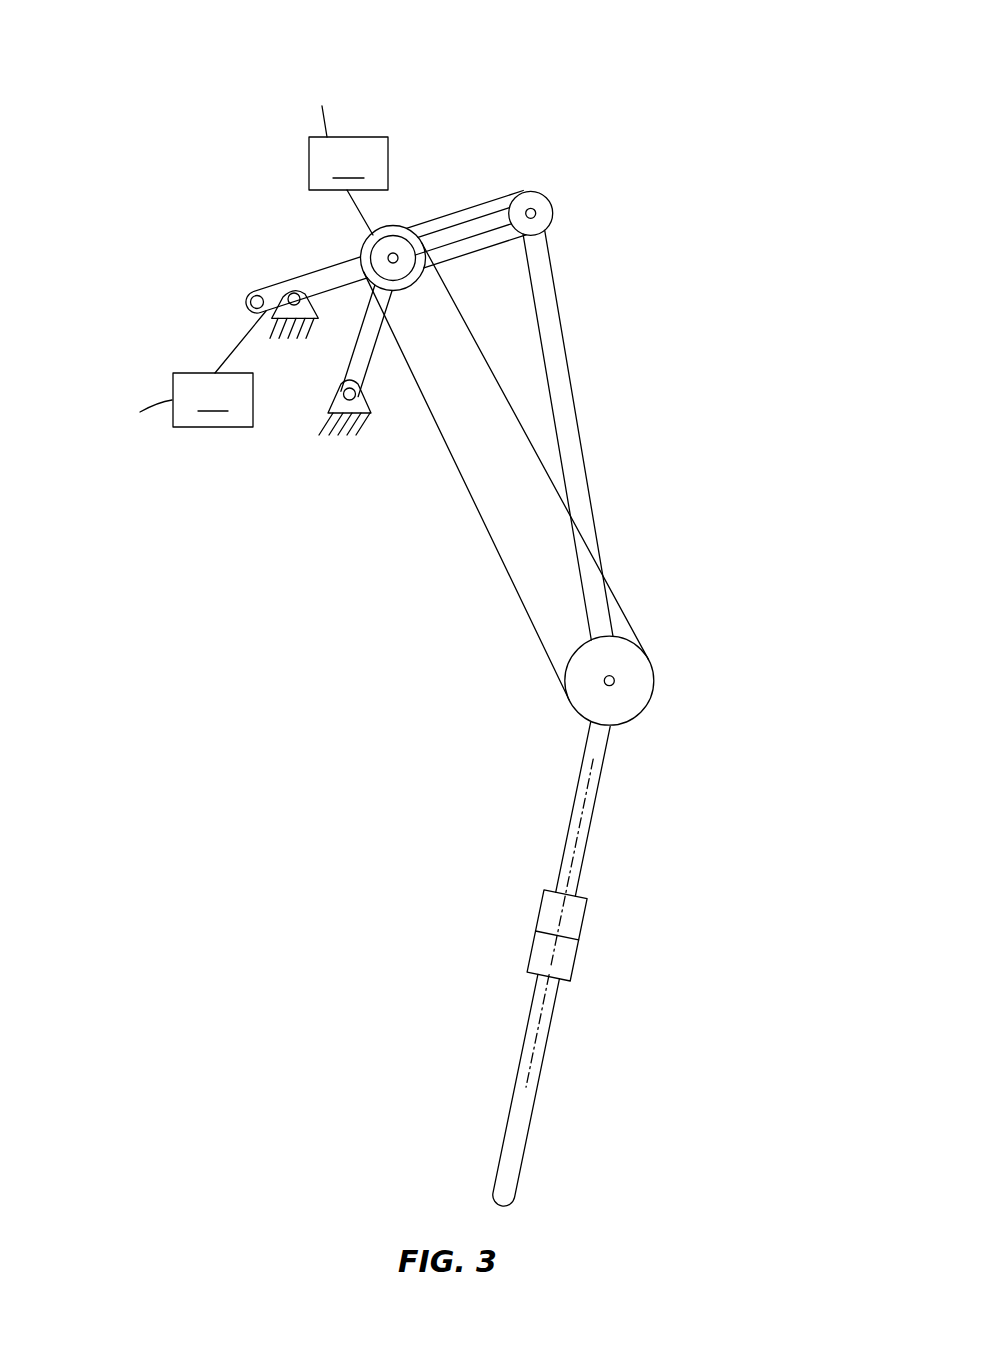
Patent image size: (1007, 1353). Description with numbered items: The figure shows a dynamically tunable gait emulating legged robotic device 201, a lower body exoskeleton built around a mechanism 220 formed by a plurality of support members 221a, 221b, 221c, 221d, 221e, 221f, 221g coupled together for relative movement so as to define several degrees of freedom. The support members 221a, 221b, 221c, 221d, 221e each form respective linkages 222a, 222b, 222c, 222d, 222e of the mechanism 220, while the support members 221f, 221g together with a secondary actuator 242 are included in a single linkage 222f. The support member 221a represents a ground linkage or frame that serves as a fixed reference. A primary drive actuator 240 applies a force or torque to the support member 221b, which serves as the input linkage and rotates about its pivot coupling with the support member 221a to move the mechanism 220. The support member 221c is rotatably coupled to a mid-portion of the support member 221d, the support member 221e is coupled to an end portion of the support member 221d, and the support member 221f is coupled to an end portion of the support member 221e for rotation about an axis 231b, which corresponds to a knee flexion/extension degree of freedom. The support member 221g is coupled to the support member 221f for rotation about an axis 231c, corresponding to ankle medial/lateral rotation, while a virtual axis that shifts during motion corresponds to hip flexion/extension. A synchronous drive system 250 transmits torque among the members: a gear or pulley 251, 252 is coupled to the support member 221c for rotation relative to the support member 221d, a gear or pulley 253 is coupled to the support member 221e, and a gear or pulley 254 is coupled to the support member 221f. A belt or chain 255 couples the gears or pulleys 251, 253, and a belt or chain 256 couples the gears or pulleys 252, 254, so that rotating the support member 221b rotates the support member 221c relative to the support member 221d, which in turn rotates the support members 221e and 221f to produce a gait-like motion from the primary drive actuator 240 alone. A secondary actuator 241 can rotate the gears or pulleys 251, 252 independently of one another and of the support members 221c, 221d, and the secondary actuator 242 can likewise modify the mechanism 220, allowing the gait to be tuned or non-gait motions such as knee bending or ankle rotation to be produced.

The legged robotic device 201 is at (236, 108).
The mechanism 220 is at (624, 282).
The primary drive actuator 240 is at (177, 375).
The secondary actuator 241 is at (329, 134).
The secondary actuator 242 is at (573, 957).
The synchronous drive system 250 is at (455, 158).
The gear or pulley 251 is at (378, 253).
The gear or pulley 252 is at (373, 238).
The gear or pulley 253 is at (548, 212).
The gear or pulley 254 is at (637, 703).
The belt or chain 255 is at (502, 195).
The belt or chain 256 is at (468, 490).
The support member 221a is at (332, 456).
The linkage 222a is at (328, 408).
The support member 221b is at (238, 288).
The linkage 222b is at (271, 298).
The support member 221c is at (273, 387).
The linkage 222c is at (362, 343).
The support member 221d is at (506, 174).
The linkage 222d is at (470, 217).
The support member 221e is at (642, 435).
The linkage 222e is at (578, 425).
The support member 221f is at (593, 825).
The linkage 222f is at (510, 913).
The support member 221g is at (537, 1097).
The axis 231b is at (617, 680).
The axis 231c is at (562, 918).